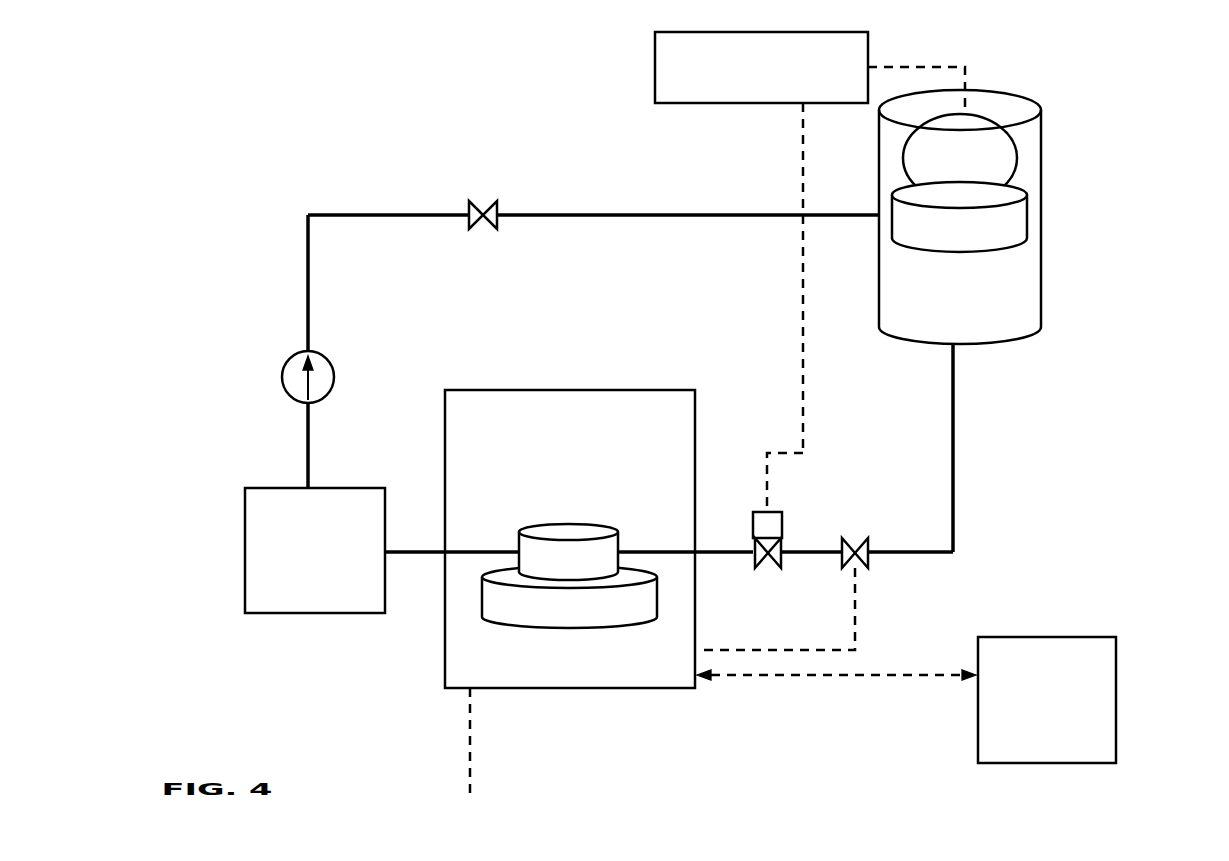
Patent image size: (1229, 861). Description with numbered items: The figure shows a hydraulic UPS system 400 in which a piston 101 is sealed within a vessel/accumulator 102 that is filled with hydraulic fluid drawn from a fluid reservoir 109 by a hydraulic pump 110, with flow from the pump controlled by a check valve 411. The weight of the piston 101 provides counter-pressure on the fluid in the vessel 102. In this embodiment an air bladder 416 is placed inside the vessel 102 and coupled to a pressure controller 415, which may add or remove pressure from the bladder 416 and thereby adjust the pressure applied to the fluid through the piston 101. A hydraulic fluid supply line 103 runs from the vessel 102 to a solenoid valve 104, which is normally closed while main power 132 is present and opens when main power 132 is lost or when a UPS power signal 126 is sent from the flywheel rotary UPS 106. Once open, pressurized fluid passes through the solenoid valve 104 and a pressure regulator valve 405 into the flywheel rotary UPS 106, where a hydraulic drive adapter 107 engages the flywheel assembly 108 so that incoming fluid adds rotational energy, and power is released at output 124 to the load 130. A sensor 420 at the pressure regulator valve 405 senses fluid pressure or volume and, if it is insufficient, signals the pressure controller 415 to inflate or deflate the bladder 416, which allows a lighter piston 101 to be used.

The UPS system 400 is at (234, 146).
The pressure controller 415 is at (810, 242).
The bladder 416 is at (1030, 146).
The vessel/accumulator 102 is at (1056, 183).
The piston 101 is at (1042, 234).
The hydraulic fluid supply line 103 is at (997, 447).
The check valve 411 is at (488, 254).
The hydraulic pump 110 is at (268, 375).
The fluid reservoir 109 is at (315, 550).
The flywheel rotary UPS 106 is at (570, 539).
The hydraulic drive adapter 107 is at (628, 517).
The flywheel assembly 108 is at (553, 642).
The sensor 420 is at (750, 499).
The pressure regulator valve 405 is at (767, 578).
The solenoid valve 104 is at (852, 528).
The UPS power signal 126 is at (818, 609).
The power output 124 is at (836, 701).
The load 130 is at (1047, 700).
The main power 132 is at (469, 771).